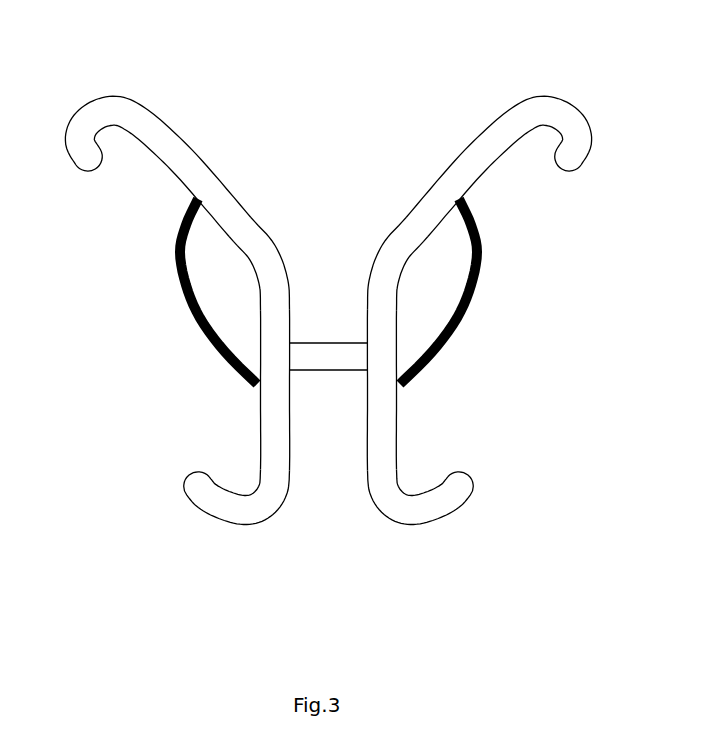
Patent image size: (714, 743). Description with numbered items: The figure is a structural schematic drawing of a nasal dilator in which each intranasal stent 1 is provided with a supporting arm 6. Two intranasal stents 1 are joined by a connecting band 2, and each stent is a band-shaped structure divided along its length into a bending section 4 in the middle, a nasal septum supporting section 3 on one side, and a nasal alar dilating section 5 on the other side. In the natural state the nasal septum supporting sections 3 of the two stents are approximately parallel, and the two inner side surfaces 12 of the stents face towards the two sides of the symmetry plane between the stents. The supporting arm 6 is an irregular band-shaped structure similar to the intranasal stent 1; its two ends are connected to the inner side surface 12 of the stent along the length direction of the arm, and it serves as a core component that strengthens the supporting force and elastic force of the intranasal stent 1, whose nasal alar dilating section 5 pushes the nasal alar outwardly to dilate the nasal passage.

The intranasal stent 1 is at (270, 525).
The connecting band 2 is at (350, 353).
The nasal septum supporting section 3 is at (277, 448).
The bending section 4 is at (262, 253).
The nasal alar dilating section 5 is at (180, 157).
The supporting arm 6 is at (180, 293).
The inner side surface of intranasal stent 12 is at (260, 303).